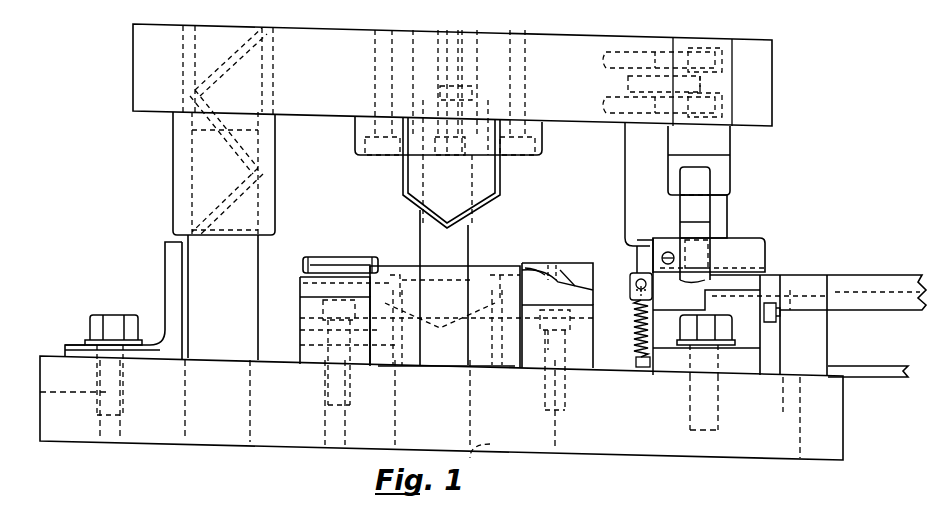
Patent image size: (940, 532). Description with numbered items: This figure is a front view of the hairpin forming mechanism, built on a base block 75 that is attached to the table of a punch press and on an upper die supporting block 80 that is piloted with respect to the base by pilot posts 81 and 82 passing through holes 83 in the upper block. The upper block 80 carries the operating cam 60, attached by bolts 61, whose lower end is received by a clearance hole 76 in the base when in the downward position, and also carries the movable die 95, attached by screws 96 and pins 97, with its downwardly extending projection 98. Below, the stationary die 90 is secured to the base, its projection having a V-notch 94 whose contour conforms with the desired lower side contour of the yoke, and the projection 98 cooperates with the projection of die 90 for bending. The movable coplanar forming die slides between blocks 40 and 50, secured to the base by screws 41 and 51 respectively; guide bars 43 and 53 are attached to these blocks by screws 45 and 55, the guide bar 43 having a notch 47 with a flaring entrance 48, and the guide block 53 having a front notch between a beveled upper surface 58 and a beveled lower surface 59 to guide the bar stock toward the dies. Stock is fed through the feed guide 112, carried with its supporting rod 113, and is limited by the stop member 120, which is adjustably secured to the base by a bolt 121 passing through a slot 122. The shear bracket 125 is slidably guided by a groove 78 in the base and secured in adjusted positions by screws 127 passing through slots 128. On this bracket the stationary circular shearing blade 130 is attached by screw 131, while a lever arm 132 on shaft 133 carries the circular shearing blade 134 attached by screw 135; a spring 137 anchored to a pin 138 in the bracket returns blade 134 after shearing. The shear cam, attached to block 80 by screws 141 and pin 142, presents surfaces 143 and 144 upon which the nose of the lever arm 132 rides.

The block 40 is at (300, 320).
The screws 41 is at (330, 328).
The guide bar 43 is at (330, 257).
The screws 45 is at (300, 287).
The notch 47 is at (312, 258).
The flaring entrance 48 is at (373, 262).
The block 50 is at (588, 325).
The screws 51 is at (570, 338).
The guide bar 53 is at (541, 262).
The screws 55 is at (560, 262).
The beveled upper surface 58 is at (570, 264).
The beveled lower surface 59 is at (546, 272).
The operating cam 60 is at (463, 235).
The bolts 61 is at (454, 42).
The base block 75 is at (845, 417).
The clearance hole 76 is at (478, 452).
The groove 78 is at (781, 385).
The upper die supporting block 80 is at (774, 84).
The pilot post 81 is at (250, 256).
The pilot post 82 is at (645, 255).
The holes 83 is at (262, 54).
The stationary die 90 is at (453, 350).
The V-notch 94 is at (446, 330).
The movable die 95 is at (543, 138).
The screws 96 is at (522, 100).
The pins 97 is at (503, 80).
The projection 98 is at (500, 178).
The feed guide 112 is at (890, 276).
The supporting rod 113 is at (893, 370).
The stop member 120 is at (167, 262).
The bolt 121 is at (112, 320).
The slot 122 is at (85, 350).
The shear bracket 125 is at (753, 355).
The screws 127 is at (700, 323).
The slots 128 is at (745, 378).
The stationary circular shearing blade 130 is at (735, 290).
The screw 131 is at (778, 320).
The lever arm 132 is at (703, 208).
The shaft 133 is at (632, 275).
The circular shearing blade 134 is at (697, 292).
The screw 135 is at (668, 252).
The spring 137 is at (634, 340).
The pin 138 is at (636, 360).
The screws 141 is at (726, 62).
The pin 142 is at (698, 60).
The surface 143 is at (720, 174).
The surface 144 is at (722, 142).